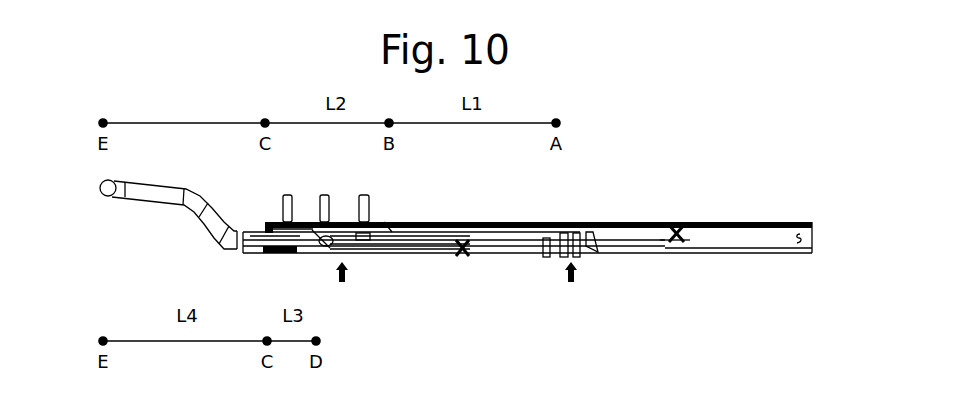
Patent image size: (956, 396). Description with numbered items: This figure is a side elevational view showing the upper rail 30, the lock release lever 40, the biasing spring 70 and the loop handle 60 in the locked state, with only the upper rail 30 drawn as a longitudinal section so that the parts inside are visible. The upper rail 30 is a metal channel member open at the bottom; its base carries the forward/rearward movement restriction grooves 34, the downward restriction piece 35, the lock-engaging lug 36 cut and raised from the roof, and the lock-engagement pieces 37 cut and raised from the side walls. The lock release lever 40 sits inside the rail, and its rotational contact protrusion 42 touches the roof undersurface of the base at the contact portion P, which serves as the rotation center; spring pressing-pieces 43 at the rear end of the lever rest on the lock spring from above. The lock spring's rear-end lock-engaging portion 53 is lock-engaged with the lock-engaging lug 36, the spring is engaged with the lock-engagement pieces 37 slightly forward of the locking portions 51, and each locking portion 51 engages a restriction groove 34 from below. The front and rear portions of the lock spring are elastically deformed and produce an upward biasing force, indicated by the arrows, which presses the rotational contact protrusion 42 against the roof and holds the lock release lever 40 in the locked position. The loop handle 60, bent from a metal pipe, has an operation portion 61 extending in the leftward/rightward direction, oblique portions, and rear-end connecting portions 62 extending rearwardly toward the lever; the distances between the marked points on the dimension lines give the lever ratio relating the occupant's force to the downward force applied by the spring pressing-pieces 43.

The upper rail 30 is at (777, 222).
The forward/rearward movement restriction groove 34 is at (580, 244).
The downward restriction piece 35 is at (553, 257).
The lock-engaging lug 36 is at (684, 229).
The lock-engagement piece 37 is at (467, 234).
The lock release lever 40 is at (384, 222).
The rotational contact protrusion 42 is at (389, 228).
The spring pressing-piece 43 is at (560, 235).
The locking portion 51 is at (575, 240).
The rear-end lock-engaging portion 53 is at (679, 233).
The loop handle 60 is at (166, 184).
The operation portion 61 is at (106, 197).
The rear-end connecting portion 62 is at (266, 223).
The biasing spring 70 is at (322, 233).